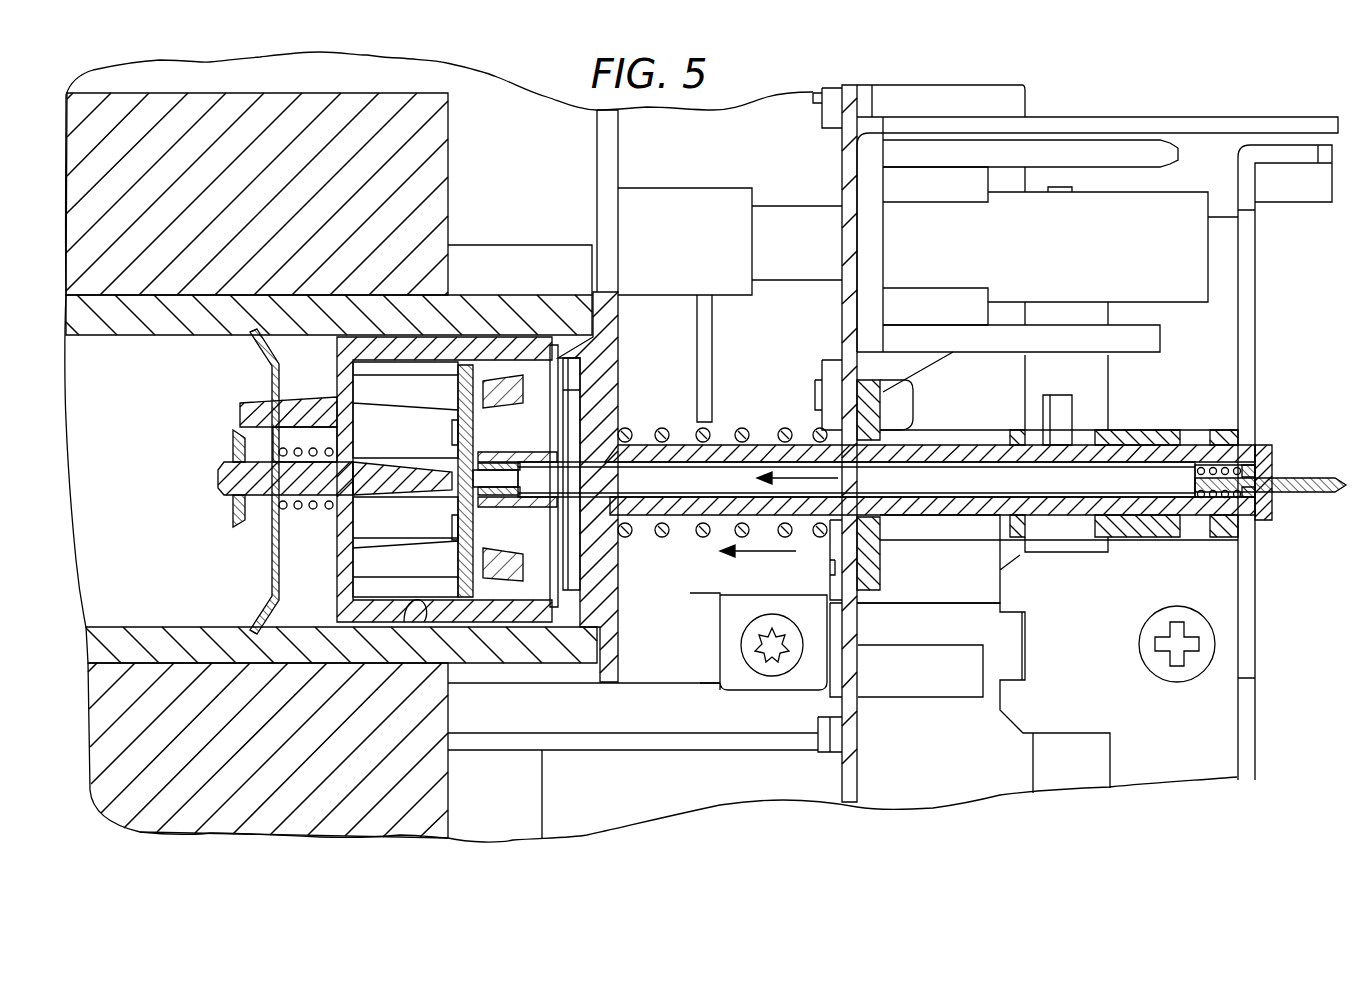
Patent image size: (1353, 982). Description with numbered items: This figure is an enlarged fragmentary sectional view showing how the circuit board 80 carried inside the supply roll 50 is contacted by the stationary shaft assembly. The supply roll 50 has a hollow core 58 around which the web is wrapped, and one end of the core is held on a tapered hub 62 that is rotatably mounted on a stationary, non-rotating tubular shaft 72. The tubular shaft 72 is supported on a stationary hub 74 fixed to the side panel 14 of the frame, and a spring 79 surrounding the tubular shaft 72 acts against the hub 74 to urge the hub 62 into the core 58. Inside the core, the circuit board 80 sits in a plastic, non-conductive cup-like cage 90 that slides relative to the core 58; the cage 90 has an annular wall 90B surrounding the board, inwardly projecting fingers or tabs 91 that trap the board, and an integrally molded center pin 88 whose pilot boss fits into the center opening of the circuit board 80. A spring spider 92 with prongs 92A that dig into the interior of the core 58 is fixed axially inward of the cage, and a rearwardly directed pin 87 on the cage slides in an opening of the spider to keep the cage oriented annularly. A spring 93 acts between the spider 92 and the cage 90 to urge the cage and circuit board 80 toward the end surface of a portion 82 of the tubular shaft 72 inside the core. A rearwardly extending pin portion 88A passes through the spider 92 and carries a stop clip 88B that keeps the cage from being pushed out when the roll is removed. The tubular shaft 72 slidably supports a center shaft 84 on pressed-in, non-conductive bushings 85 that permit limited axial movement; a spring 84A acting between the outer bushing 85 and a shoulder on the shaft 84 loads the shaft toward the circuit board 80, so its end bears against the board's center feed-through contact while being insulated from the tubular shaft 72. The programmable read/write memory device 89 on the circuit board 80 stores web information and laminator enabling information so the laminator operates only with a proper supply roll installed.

The side panel 14 is at (848, 322).
The supply roll 50 is at (395, 128).
The hollow core 58 is at (485, 305).
The second tapered hub 62 is at (608, 351).
The tubular shaft 72 is at (1266, 461).
The hub 74 is at (1140, 428).
The spring 79 is at (742, 427).
The circuit board 80 is at (478, 420).
The portion of tubular shaft 82 is at (538, 500).
The center shaft 84 is at (1148, 481).
The spring 84A is at (1200, 452).
The bushings 85 is at (488, 492).
The pin 87 is at (240, 412).
The center pin 88 is at (380, 472).
The pin portion 88A is at (219, 478).
The stop clip 88B is at (236, 510).
The programmable read/write memory device 89 is at (455, 525).
The cage 90 is at (335, 382).
The annular wall 90B is at (412, 612).
The fingers or tabs 91 is at (506, 378).
The spider 92 is at (270, 547).
The prongs 92A is at (256, 347).
The spring 93 is at (297, 510).